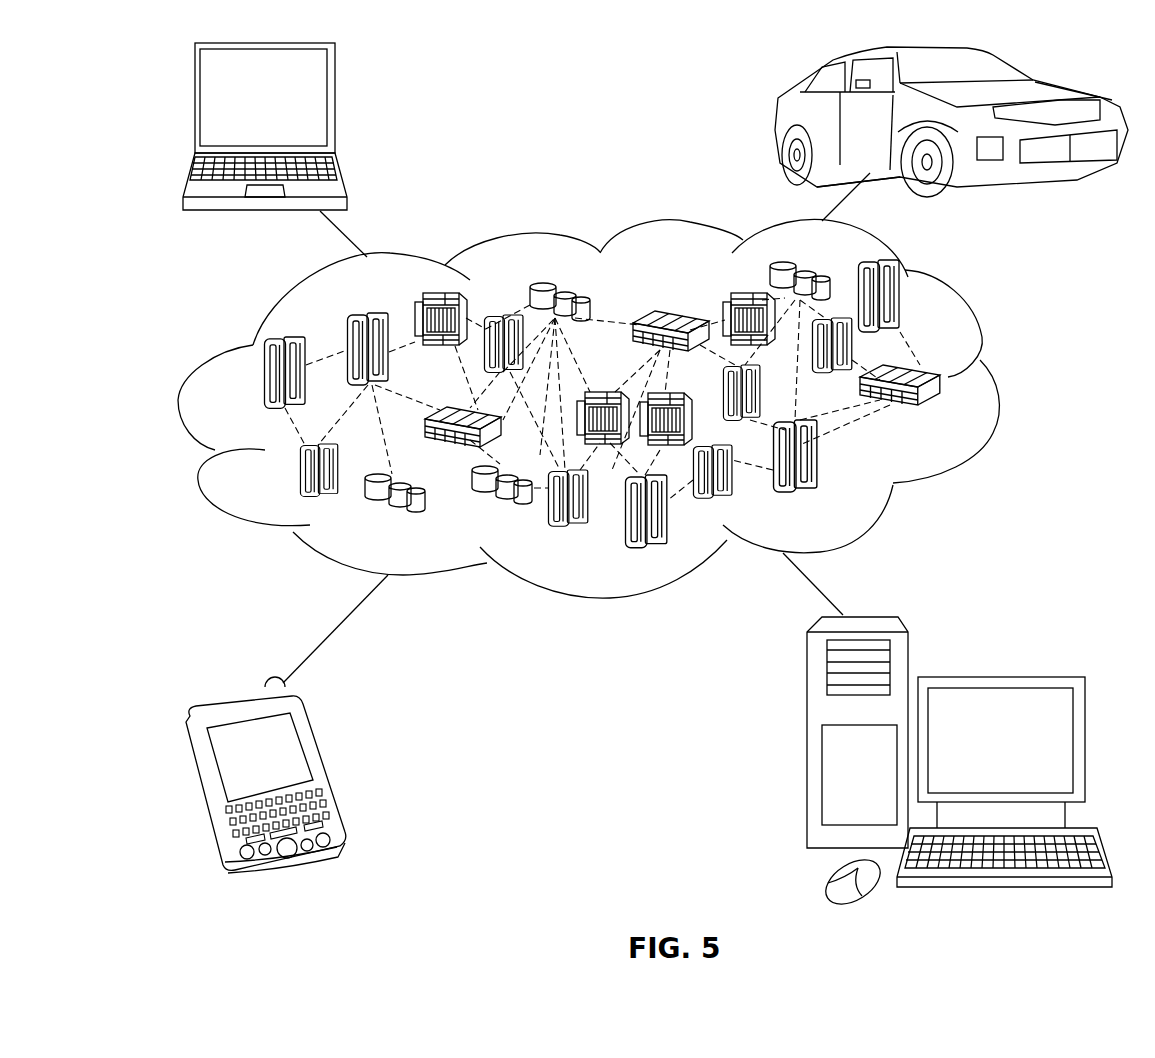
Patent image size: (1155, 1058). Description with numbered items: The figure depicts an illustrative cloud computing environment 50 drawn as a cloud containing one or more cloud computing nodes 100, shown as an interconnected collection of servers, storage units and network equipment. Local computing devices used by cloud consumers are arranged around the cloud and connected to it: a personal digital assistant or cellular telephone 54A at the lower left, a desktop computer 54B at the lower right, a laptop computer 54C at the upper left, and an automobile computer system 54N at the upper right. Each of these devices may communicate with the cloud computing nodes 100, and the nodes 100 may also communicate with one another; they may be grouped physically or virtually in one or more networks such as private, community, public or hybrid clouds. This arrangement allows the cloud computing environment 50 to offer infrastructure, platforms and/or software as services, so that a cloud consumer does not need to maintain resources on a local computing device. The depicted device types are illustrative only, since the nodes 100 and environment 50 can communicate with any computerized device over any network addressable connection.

The cloud computing environment 50 is at (1000, 383).
The cloud computing nodes 100 is at (940, 413).
The personal digital assistant or cellular telephone 54A is at (323, 770).
The desktop computer 54B is at (998, 676).
The laptop computer 54C is at (335, 106).
The automobile computer system 54N is at (778, 118).